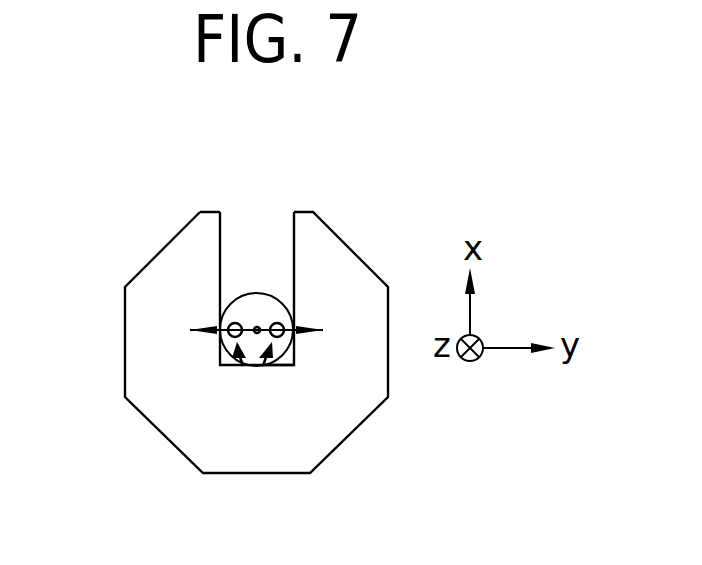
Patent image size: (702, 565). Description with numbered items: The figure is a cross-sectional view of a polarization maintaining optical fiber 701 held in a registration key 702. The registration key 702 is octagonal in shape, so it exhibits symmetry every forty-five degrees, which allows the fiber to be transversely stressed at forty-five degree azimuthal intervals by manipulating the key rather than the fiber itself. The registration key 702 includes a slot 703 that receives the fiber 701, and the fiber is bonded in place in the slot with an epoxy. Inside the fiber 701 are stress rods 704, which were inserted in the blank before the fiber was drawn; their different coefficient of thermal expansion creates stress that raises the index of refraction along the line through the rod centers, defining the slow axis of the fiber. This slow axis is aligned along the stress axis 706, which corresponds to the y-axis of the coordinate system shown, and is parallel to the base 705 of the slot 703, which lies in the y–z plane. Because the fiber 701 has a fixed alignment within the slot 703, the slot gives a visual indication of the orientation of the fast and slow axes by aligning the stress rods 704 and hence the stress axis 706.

The optical fiber 701 is at (255, 291).
The registration key 702 is at (353, 250).
The slot 703 is at (228, 220).
The stress rods 704 is at (263, 366).
The base of the slot 705 is at (278, 367).
The stress axis 706 is at (295, 335).